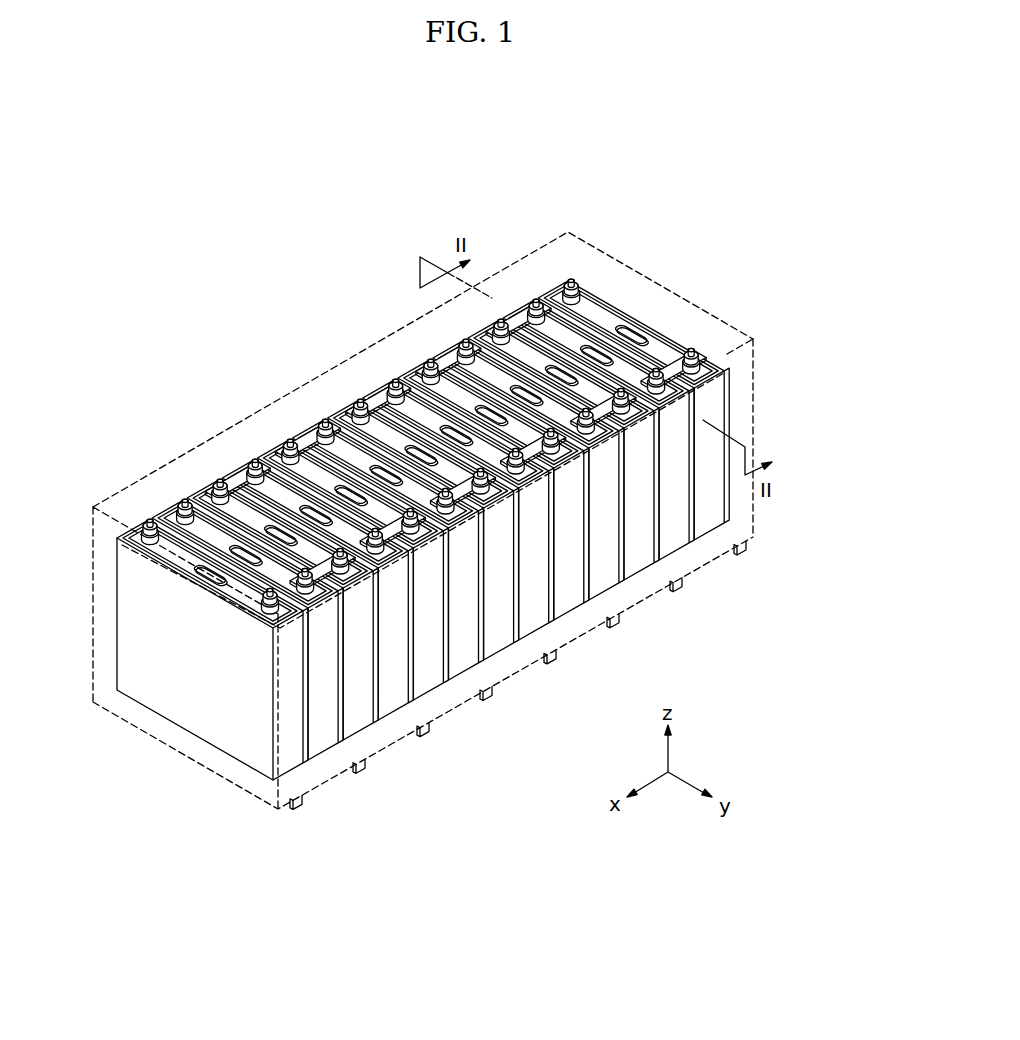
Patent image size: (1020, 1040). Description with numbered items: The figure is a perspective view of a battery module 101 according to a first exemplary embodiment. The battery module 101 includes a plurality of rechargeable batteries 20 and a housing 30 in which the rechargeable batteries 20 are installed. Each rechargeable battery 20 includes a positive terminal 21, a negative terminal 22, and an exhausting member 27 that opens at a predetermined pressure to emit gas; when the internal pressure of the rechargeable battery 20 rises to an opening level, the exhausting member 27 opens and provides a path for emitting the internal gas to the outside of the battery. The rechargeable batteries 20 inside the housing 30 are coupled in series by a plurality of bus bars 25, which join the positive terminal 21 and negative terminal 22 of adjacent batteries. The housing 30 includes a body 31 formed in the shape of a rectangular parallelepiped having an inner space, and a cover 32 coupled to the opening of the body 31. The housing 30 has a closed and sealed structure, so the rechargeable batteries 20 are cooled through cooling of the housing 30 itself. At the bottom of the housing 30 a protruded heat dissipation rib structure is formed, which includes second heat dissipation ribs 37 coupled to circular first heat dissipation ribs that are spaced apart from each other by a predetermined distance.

The battery module 101 is at (415, 520).
The rechargeable battery 20 is at (319, 767).
The positive terminal 21 is at (147, 525).
The negative terminal 22 is at (181, 503).
The bus bar 25 is at (240, 474).
The exhausting member 27 is at (340, 488).
The housing 30 is at (725, 306).
The body 31 is at (675, 563).
The cover 32 is at (641, 290).
The second heat dissipation rib 37 is at (486, 698).